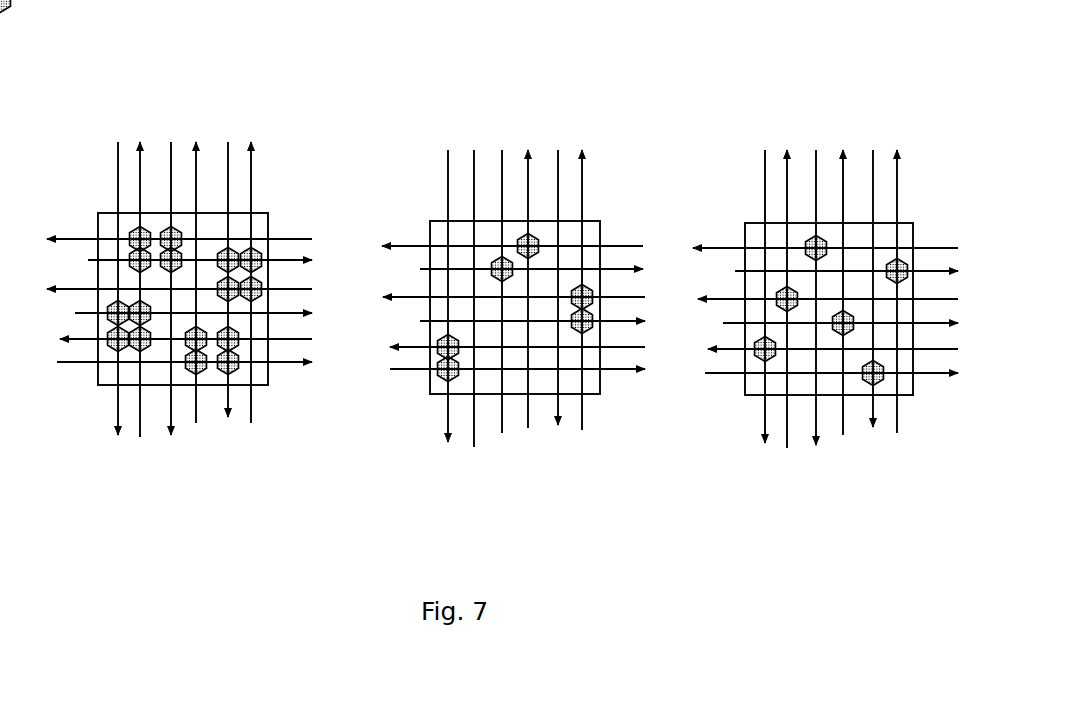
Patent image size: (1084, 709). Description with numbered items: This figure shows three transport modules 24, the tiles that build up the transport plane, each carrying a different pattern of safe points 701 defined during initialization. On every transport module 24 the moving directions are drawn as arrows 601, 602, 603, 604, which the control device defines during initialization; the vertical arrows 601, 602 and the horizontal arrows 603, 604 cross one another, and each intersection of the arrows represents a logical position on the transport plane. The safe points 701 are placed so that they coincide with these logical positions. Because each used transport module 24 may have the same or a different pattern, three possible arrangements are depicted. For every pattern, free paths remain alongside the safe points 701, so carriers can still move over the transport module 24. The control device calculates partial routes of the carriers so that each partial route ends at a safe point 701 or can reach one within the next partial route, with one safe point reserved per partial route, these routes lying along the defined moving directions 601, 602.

The transport module 24 is at (105, 378).
The moving direction arrow 601 is at (199, 166).
The moving direction arrow 602 is at (171, 167).
The moving direction arrow 603 is at (282, 365).
The moving direction arrow 604 is at (400, 243).
The safe point 701 is at (197, 378).